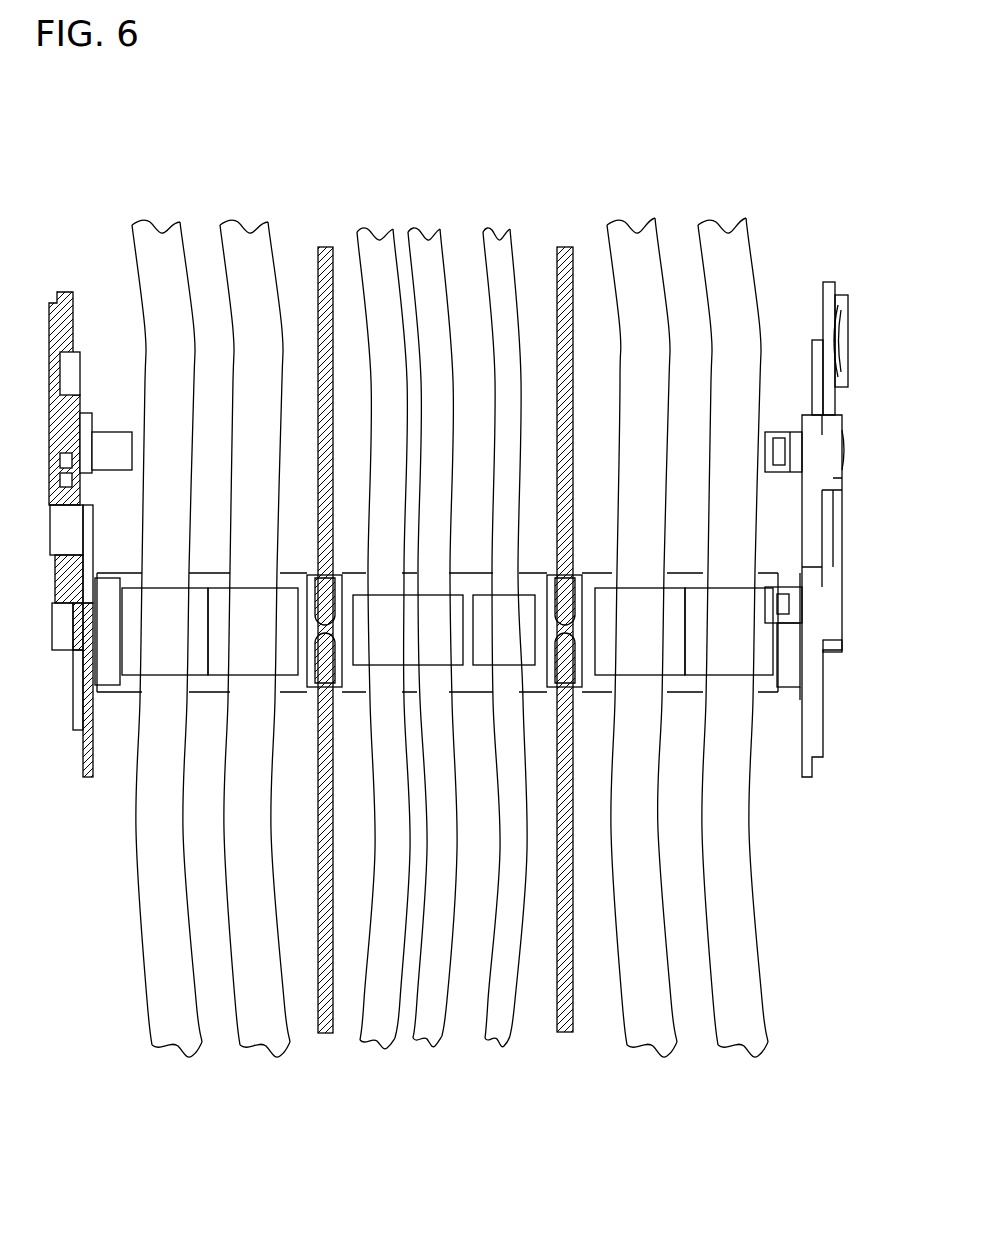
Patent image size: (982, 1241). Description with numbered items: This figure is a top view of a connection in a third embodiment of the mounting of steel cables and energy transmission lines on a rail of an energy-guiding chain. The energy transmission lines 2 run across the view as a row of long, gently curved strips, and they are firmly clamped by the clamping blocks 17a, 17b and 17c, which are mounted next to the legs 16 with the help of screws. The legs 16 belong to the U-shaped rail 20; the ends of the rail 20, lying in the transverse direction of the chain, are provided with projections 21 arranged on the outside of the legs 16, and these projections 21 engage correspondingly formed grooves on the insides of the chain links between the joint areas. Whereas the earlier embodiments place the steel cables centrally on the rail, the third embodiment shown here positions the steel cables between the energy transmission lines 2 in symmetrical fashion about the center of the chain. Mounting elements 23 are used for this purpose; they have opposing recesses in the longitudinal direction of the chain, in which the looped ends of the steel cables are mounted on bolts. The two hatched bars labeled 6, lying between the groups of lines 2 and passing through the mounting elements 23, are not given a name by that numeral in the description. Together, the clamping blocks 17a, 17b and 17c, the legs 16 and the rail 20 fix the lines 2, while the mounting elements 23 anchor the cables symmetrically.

The energy transmission lines 2 is at (252, 275).
The spacer bars 6 is at (323, 250).
The legs 16 is at (104, 628).
The clamping block 17a is at (447, 631).
The clamping block 17b is at (408, 630).
The clamping block 17c is at (504, 630).
The rail 20 is at (475, 700).
The projections 21 is at (83, 630).
The mounting elements 23 is at (340, 625).